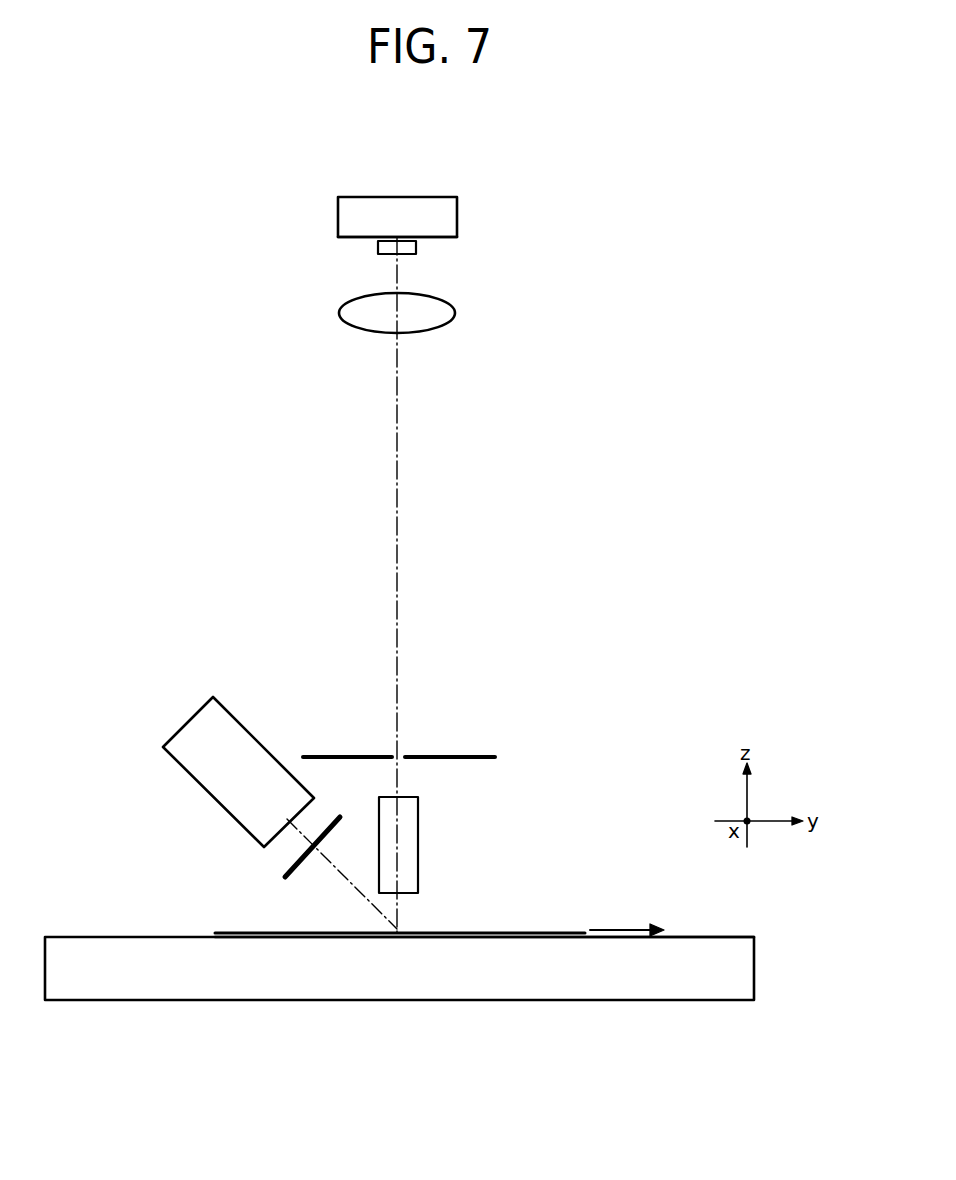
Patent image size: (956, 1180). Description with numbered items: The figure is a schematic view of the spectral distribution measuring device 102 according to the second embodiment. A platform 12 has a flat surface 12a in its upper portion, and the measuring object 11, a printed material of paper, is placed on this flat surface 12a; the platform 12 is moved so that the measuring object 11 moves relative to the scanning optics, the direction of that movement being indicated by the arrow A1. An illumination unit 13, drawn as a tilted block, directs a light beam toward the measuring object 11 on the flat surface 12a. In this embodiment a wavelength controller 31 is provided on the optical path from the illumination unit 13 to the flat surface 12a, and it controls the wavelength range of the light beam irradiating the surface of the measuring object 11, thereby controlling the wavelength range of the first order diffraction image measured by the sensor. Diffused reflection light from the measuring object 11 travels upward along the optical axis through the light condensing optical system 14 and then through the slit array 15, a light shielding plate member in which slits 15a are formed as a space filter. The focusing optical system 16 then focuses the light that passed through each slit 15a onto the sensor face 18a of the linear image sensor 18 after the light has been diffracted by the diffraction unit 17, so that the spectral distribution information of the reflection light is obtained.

The spectral distribution measuring device 102 is at (126, 345).
The linear image sensor 18 is at (460, 186).
The sensor face 18a is at (355, 238).
The diffraction unit 17 is at (420, 265).
The focusing optical system 16 is at (451, 335).
The illumination unit 13 is at (228, 710).
The slit array 15 is at (475, 742).
The slit 15a is at (405, 756).
The light condensing optical system 14 is at (419, 845).
The wavelength controller 31 is at (287, 872).
The measuring object 11 is at (525, 930).
The conveyance direction A1 is at (617, 928).
The platform 12 is at (702, 999).
The flat surface 12a is at (698, 935).